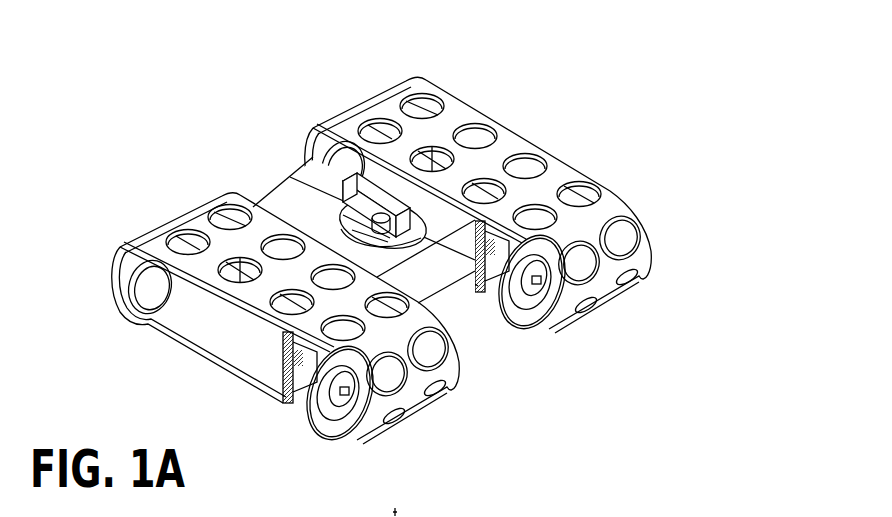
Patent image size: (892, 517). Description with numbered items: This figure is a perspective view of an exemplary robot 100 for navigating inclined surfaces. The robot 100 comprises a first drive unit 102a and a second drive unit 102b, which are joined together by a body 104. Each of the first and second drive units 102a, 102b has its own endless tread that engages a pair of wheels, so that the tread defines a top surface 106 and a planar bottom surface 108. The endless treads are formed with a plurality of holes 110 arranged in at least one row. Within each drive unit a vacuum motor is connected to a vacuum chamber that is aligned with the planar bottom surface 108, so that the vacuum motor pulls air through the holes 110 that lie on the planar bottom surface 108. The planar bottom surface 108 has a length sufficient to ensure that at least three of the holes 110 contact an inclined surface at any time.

The robot 100 is at (419, 249).
The first drive unit 102a is at (339, 275).
The second drive unit 102b is at (618, 308).
The body 104 is at (443, 267).
The top surface 106 is at (262, 228).
The planar bottom surface 108 is at (280, 408).
The holes 110 is at (260, 313).